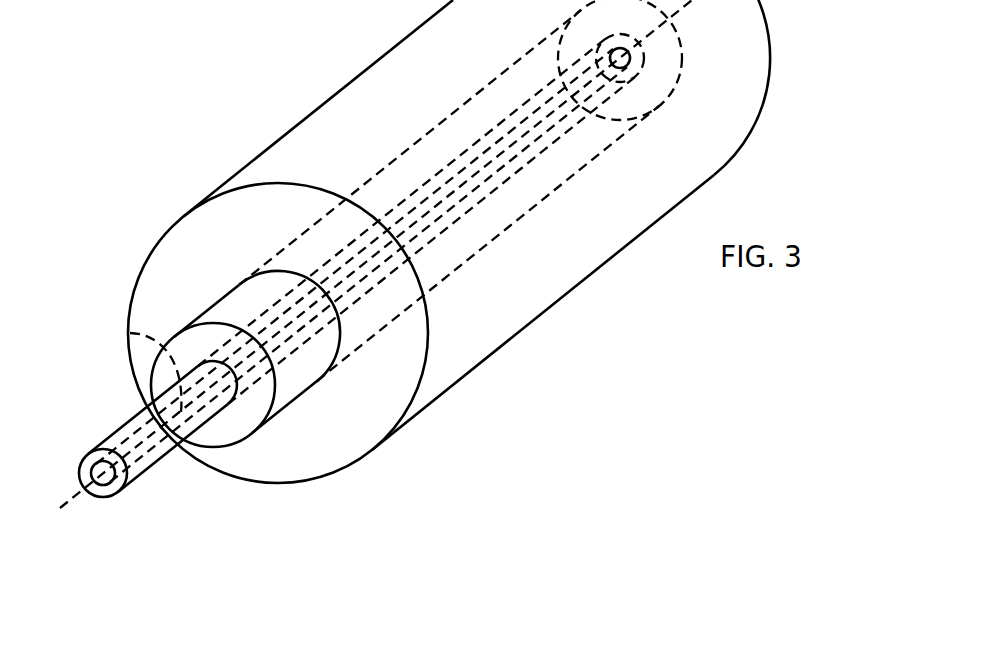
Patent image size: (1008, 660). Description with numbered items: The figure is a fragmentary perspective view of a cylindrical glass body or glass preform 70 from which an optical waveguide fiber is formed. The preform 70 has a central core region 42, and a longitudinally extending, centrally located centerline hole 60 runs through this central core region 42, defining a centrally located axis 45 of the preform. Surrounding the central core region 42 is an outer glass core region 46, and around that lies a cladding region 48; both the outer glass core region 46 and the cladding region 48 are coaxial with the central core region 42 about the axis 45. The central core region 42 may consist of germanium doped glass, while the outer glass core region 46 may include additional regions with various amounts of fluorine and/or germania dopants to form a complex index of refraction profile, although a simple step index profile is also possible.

The glass preform 70 is at (338, 78).
The cladding region 48 is at (338, 425).
The outer glass core region 46 is at (197, 347).
The centrally located axis 45 is at (130, 333).
The central core region 42 is at (90, 453).
The centerline hole 60 is at (103, 470).